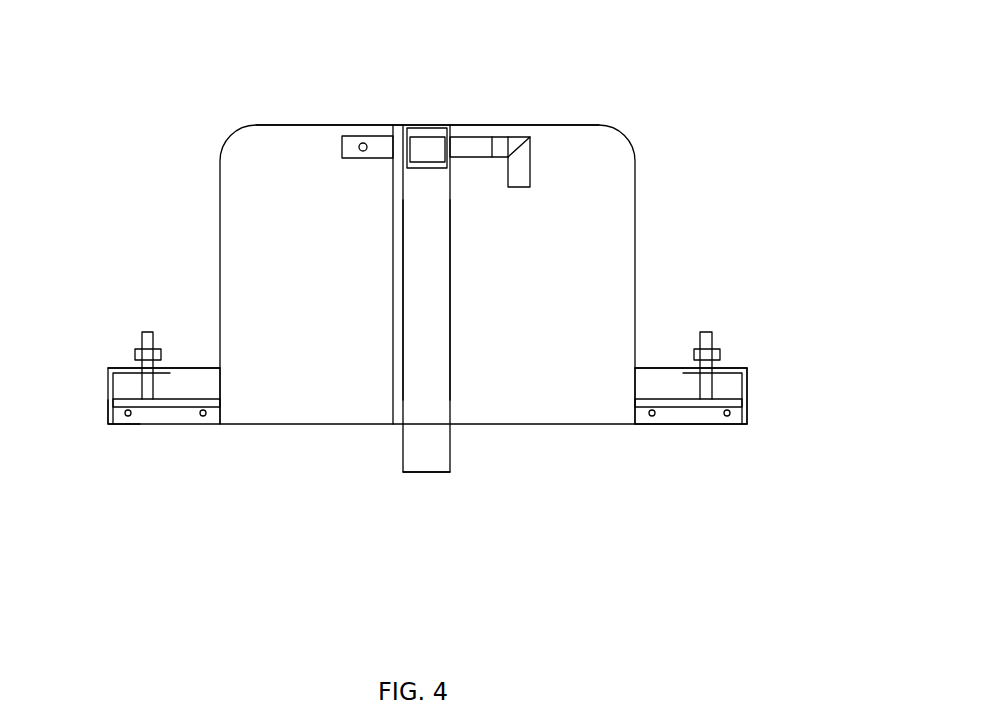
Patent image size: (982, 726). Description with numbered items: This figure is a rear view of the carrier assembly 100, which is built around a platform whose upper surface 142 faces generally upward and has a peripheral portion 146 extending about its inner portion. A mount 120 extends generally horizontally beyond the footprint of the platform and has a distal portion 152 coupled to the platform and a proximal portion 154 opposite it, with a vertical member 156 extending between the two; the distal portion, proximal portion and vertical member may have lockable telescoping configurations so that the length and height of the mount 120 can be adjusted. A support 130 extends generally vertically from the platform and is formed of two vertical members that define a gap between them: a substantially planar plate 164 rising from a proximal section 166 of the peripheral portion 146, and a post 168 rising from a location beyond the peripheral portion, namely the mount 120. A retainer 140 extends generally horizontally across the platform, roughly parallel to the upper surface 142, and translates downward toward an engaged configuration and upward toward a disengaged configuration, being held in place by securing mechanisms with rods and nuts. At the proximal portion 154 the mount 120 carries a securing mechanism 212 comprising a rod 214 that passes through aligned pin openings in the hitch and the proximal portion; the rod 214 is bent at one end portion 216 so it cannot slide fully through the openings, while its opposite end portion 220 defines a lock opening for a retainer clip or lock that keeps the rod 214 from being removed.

The carrier assembly 100 is at (198, 64).
The mount 120 is at (462, 456).
The support 130 is at (631, 132).
The retainer 140 is at (748, 412).
The upper surface 142 is at (652, 372).
The peripheral portion 146 is at (120, 430).
The distal portion 152 is at (418, 473).
The proximal portion 154 is at (420, 170).
The vertical member 156 is at (427, 292).
The plate 164 is at (270, 125).
The proximal section 166 is at (725, 437).
The post 168 is at (393, 403).
The securing mechanism 212 is at (533, 199).
The rod 214 is at (507, 136).
The end portion 216 is at (543, 153).
The end portion 220 is at (345, 168).